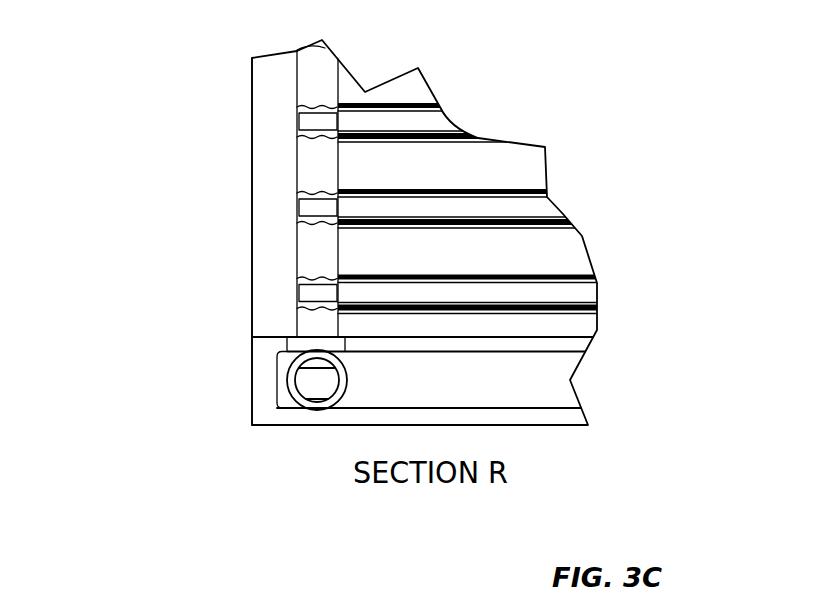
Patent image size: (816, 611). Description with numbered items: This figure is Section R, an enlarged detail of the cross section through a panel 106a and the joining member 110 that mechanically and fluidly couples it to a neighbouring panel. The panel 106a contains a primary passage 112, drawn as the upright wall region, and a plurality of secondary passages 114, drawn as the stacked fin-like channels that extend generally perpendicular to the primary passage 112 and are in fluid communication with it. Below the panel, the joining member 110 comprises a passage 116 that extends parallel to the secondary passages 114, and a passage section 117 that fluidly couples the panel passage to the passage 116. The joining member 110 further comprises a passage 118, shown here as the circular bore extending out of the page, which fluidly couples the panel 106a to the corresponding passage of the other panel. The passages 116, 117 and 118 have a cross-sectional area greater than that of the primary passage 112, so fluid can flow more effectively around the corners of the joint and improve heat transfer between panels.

The panel 106a is at (277, 87).
The joining member 110 is at (268, 375).
The primary passage 112 is at (313, 158).
The secondary passages 114 is at (400, 122).
The passage 116 is at (526, 375).
The passage section 117 is at (300, 349).
The passage 118 is at (316, 381).